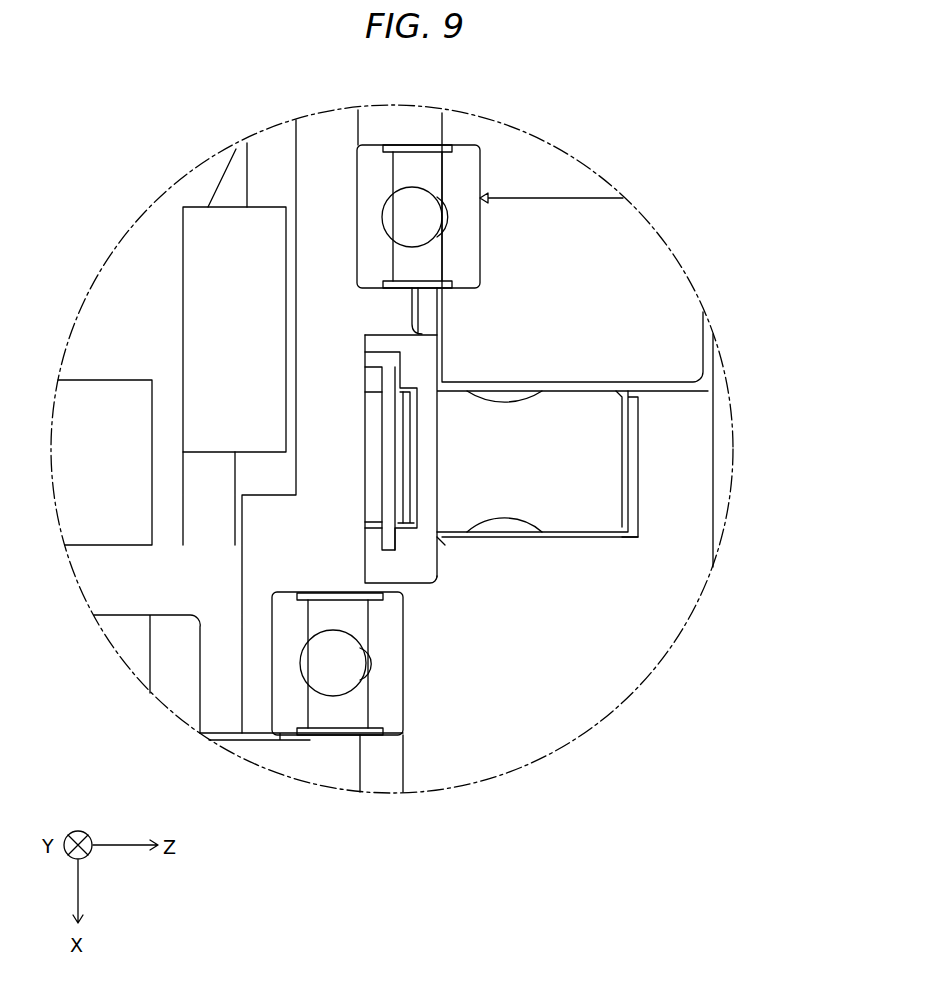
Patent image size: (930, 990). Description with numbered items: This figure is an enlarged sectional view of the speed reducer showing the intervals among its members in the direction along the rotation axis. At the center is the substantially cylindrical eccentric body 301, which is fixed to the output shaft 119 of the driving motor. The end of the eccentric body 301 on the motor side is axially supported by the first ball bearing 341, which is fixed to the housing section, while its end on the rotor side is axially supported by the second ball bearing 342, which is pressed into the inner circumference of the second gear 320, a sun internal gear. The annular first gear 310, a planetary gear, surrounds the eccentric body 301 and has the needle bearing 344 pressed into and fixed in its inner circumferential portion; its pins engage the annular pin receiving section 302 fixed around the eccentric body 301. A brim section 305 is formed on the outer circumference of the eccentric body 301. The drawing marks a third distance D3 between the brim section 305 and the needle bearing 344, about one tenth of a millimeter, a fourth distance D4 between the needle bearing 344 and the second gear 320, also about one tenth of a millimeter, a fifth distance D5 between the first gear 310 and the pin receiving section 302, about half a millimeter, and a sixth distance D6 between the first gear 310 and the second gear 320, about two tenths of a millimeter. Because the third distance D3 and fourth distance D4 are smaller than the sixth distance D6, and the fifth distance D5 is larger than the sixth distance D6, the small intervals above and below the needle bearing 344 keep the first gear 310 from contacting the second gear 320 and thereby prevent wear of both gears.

The output shaft 119 is at (165, 227).
The eccentric body 301 is at (330, 410).
The pin receiving section 302 is at (550, 233).
The brim section 305 is at (401, 294).
The first gear 310 is at (610, 477).
The second gear 320 is at (677, 477).
The first ball bearing 341 is at (383, 173).
The second ball bearing 342 is at (285, 725).
The needle bearing 344 is at (408, 466).
The third distance D3 is at (383, 324).
The fourth distance D4 is at (425, 595).
The fifth distance D5 is at (561, 371).
The sixth distance D6 is at (593, 543).